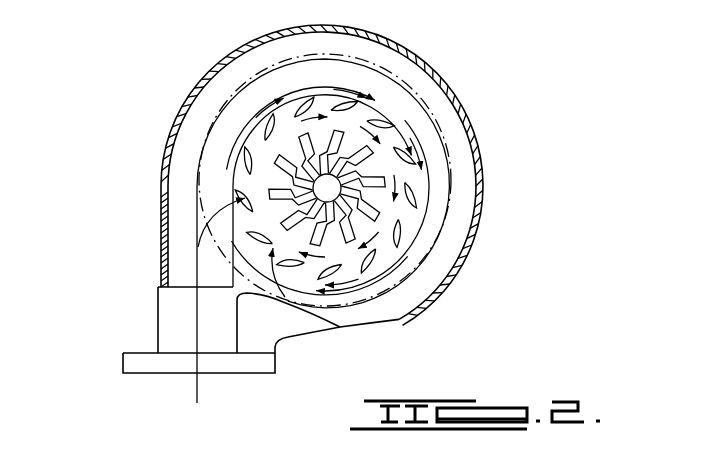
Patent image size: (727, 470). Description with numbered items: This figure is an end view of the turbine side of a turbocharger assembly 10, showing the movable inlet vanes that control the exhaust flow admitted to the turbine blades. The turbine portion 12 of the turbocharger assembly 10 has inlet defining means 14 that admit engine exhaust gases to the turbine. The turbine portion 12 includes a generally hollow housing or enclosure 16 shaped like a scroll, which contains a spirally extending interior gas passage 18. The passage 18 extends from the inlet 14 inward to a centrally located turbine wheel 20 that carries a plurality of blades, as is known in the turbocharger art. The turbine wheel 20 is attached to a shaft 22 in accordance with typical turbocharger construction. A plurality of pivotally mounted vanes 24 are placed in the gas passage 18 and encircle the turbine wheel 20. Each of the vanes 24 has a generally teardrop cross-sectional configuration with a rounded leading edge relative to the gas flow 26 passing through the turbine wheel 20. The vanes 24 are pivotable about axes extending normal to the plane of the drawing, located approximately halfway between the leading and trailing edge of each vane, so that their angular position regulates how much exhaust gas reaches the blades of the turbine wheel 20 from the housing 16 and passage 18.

The turbocharger assembly 10 is at (122, 376).
The turbine portion 12 is at (469, 96).
The inlet defining means 14 is at (178, 328).
The housing 16 is at (161, 186).
The spirally extending interior gas passage 18 is at (398, 62).
The turbine wheel 20 is at (352, 175).
The shaft 22 is at (292, 201).
The pivotally mounted vanes 24 is at (352, 106).
The gas flow 26 is at (440, 158).